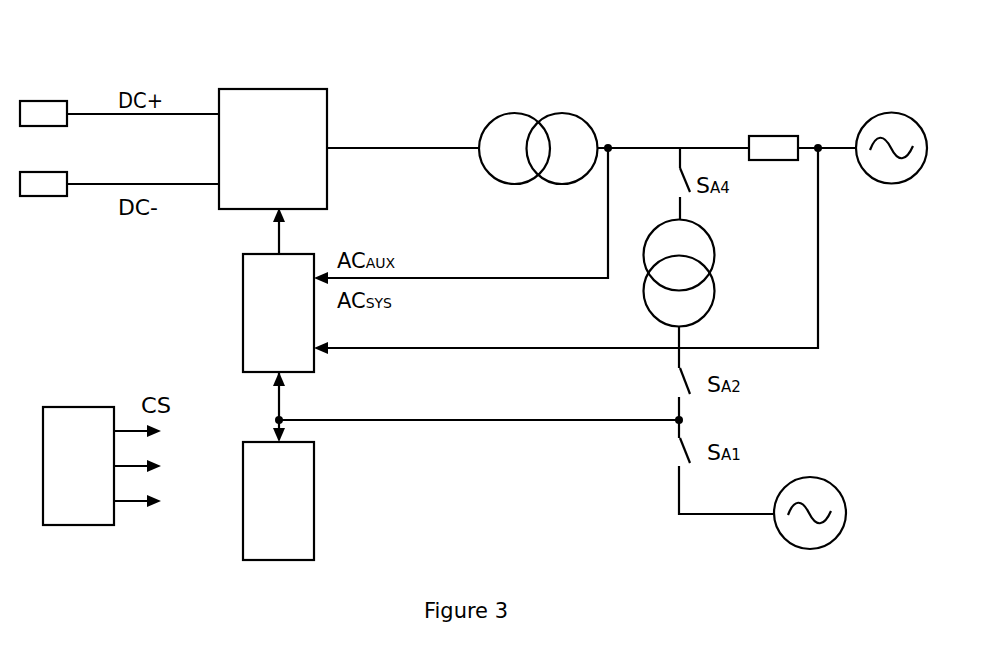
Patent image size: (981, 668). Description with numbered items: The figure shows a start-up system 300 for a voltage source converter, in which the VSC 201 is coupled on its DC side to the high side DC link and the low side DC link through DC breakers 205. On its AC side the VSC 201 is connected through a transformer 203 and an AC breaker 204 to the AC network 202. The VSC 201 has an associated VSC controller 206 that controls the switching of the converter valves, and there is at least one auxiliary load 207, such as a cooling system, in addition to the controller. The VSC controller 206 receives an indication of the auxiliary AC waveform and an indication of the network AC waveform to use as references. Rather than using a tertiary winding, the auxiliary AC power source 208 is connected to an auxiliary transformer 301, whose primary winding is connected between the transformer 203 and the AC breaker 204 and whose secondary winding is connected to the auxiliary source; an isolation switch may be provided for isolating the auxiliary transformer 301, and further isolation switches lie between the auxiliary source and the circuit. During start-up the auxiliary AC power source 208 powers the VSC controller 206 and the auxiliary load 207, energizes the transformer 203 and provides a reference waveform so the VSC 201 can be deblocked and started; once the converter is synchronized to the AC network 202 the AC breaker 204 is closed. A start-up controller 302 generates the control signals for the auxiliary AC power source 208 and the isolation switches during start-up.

The VSC start-up system 300 is at (382, 67).
The VSC 201 is at (284, 158).
The DC breakers 205 is at (57, 100).
The VSC controller 206 is at (297, 326).
The auxiliary load 207 is at (297, 500).
The start-up controller 302 is at (96, 461).
The transformer 203 is at (550, 113).
The AC breaker 204 is at (780, 135).
The AC network 202 is at (883, 112).
The auxiliary transformer 301 is at (717, 253).
The auxiliary AC power source 208 is at (806, 476).